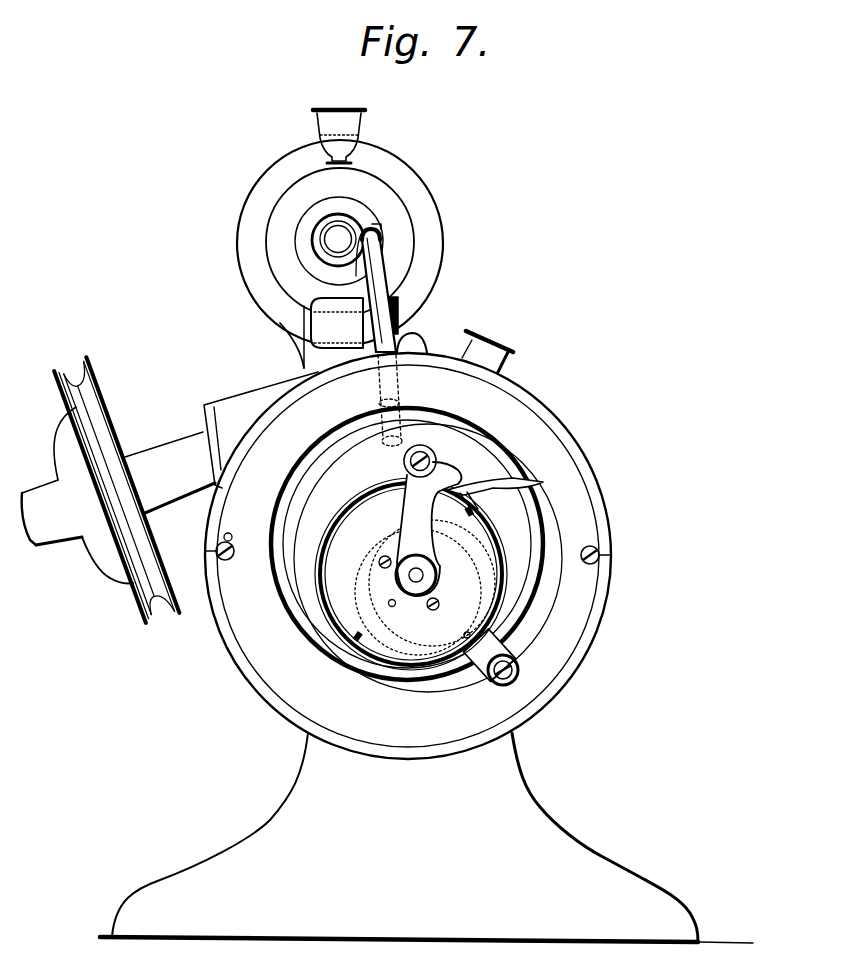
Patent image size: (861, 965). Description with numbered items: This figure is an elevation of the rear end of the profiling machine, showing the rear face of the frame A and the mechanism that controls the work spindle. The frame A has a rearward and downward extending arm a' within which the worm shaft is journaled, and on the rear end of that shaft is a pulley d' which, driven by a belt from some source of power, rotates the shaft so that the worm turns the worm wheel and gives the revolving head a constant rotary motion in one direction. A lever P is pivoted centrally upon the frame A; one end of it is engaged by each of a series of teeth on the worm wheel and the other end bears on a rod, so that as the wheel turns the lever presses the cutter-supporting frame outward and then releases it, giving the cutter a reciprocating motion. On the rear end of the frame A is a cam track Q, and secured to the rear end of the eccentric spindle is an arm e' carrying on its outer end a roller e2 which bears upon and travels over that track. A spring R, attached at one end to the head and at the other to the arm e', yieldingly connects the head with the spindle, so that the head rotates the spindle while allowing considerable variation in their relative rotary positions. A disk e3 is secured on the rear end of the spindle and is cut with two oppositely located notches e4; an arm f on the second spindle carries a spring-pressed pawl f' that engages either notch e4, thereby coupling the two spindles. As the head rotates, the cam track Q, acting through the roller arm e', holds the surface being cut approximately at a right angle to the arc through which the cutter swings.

The frame A is at (426, 648).
The lever P is at (372, 283).
The rearward and downward extending arm a' is at (261, 426).
The pulley d' is at (118, 490).
The cam track Q is at (300, 467).
The spring R is at (322, 578).
The arm f is at (416, 520).
The spring-pressed pawl f' is at (495, 467).
The arm e' is at (526, 675).
The roller e2 is at (520, 662).
The disk e3 is at (416, 587).
The notches e4 is at (473, 510).